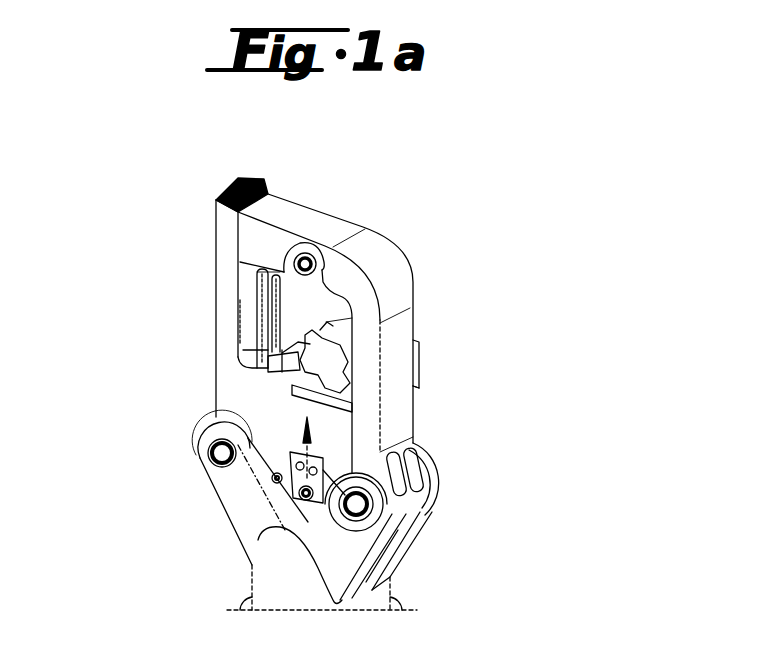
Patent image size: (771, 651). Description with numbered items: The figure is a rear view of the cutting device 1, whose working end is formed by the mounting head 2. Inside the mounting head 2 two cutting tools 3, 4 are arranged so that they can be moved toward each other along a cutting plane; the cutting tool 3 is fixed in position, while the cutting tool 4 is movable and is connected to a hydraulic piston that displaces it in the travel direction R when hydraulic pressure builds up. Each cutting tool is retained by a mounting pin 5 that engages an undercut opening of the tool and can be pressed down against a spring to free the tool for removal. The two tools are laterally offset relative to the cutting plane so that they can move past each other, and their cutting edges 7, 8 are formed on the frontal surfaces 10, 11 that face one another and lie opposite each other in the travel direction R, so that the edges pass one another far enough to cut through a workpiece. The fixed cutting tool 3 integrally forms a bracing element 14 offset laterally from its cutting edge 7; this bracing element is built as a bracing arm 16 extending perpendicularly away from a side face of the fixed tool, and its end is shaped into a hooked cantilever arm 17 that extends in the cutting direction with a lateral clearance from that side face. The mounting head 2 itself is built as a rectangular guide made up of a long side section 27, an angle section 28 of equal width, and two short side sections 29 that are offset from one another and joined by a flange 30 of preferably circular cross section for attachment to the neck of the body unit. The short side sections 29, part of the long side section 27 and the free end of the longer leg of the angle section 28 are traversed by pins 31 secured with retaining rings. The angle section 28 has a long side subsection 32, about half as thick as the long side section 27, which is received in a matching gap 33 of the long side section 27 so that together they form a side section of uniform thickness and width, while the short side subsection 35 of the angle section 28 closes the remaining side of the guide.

The cutting device 1 is at (563, 350).
The mounting head 2 is at (172, 330).
The cutting tool 3 is at (330, 323).
The cutting tool 4 is at (290, 434).
The mounting pin 5 is at (297, 262).
The cutting edge 7 is at (316, 336).
The cutting edge 8 is at (300, 393).
The frontal surface 10 is at (292, 349).
The frontal surface 11 is at (288, 372).
The bracing element 14 is at (432, 340).
The bracing arm 16 is at (419, 354).
The cantilever arm 17 is at (419, 380).
The long side section 27 is at (230, 240).
The angle section 28 is at (372, 242).
The short side section 29 is at (350, 545).
The flange 30 is at (268, 577).
The pin 31 is at (222, 453).
The long side subsection 32 is at (245, 343).
The gap 33 is at (308, 342).
The short side subsection 35 is at (282, 240).
The travel direction R is at (277, 478).